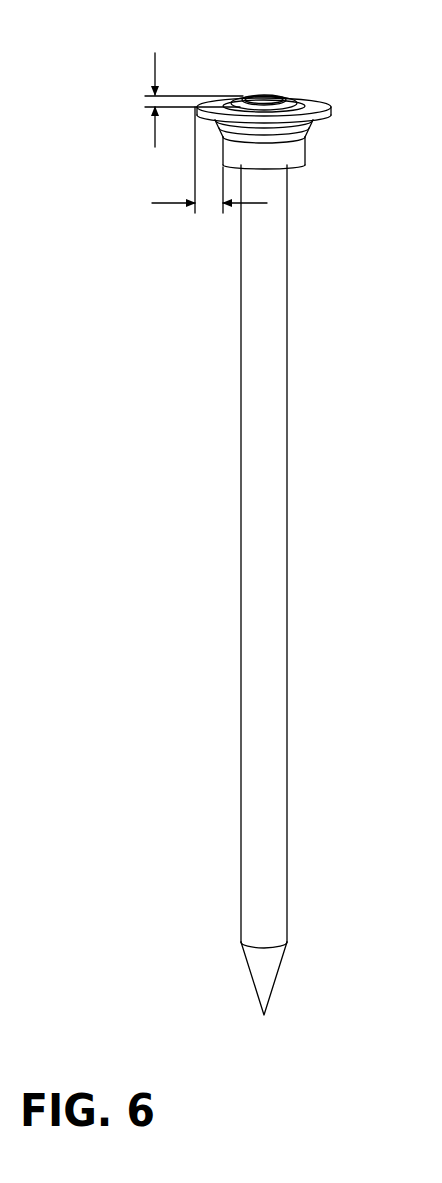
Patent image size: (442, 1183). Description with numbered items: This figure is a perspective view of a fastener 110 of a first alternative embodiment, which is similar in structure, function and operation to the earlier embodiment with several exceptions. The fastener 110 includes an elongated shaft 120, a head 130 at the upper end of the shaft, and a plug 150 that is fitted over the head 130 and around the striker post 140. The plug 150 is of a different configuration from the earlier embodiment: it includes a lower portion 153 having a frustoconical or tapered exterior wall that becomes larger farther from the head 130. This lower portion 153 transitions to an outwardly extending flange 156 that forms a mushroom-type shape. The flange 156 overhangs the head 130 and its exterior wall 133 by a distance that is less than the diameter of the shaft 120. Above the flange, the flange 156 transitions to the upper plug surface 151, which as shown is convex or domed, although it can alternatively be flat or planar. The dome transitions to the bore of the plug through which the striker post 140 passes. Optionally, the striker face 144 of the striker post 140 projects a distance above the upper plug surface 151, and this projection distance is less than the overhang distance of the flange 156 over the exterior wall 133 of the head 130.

The fastener 110 is at (208, 412).
The shaft 120 is at (250, 526).
The head 130 is at (267, 157).
The exterior wall 133 is at (312, 150).
The striker post 140 is at (277, 103).
The striker face 144 is at (260, 100).
The plug 150 is at (323, 122).
The upper plug surface 151 is at (307, 107).
The lower portion 153 is at (310, 135).
The flange 156 is at (334, 108).